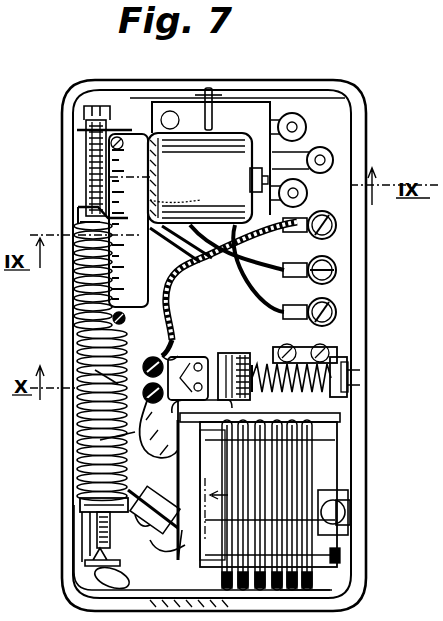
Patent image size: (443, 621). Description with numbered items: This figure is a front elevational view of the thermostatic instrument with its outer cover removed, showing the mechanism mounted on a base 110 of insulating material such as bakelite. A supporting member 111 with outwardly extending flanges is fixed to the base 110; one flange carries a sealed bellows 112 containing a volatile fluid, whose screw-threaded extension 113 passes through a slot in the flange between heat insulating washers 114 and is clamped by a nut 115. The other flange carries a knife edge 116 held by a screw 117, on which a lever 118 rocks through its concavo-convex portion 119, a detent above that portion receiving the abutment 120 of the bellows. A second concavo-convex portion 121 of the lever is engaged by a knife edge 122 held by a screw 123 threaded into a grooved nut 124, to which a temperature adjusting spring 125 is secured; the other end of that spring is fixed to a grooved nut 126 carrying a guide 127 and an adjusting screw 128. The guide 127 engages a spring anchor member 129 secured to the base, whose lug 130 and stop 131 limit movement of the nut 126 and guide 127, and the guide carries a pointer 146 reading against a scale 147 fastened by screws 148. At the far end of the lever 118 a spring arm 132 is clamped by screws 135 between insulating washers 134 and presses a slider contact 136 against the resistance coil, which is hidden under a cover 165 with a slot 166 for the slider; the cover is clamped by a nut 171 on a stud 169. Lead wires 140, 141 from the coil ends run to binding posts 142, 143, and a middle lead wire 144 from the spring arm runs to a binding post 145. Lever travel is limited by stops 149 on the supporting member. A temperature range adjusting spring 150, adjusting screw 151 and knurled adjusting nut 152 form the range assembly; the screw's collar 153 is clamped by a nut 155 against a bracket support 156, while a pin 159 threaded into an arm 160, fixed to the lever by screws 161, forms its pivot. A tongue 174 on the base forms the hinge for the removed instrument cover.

The base 110 is at (368, 465).
The supporting member 111 is at (343, 558).
The sealed bellows 112 is at (293, 590).
The screw-threaded extension 113 is at (345, 498).
The heat insulating washers 114 is at (343, 530).
The nut 115 is at (346, 512).
The knife edge 116 is at (165, 528).
The screw 117 is at (135, 520).
The lever 118 is at (170, 440).
The concavo-convex portion 119 is at (168, 550).
The abutment 120 is at (185, 545).
The concavo-convex portion 121 is at (86, 550).
The knife edge 122 is at (88, 563).
The screw 123 is at (97, 530).
The grooved nut 124 is at (80, 504).
The temperature adjusting spring 125 is at (135, 432).
The grooved nut 126 is at (80, 224).
The guide 127 is at (80, 214).
The adjusting screw 128 is at (88, 146).
The spring anchor member 129 is at (138, 130).
The lug 130 is at (72, 122).
The stop 131 is at (80, 304).
The spring arm 132 is at (160, 318).
The insulating washers 134 is at (168, 352).
The screws 135 is at (142, 426).
The slider contact 136 is at (160, 232).
The lead wire 140 is at (250, 268).
The lead wire 141 is at (276, 295).
The binding post 142 is at (336, 312).
The binding post 143 is at (338, 278).
The middle lead wire 144 is at (250, 230).
The binding post 145 is at (336, 229).
The pointer 146 is at (135, 222).
The scale 147 is at (150, 166).
The screws 148 is at (120, 316).
The stops 149 is at (195, 400).
The temperature range adjusting spring 150 is at (262, 366).
The adjusting screw 151 is at (300, 398).
The knurled adjusting nut 152 is at (232, 356).
The collar 153 is at (332, 395).
The nut 155 is at (348, 378).
The bracket support 156 is at (362, 348).
The pin 159 is at (118, 380).
The arm 160 is at (105, 362).
The screws 161 is at (195, 362).
The cover 165 is at (222, 140).
The slot 166 is at (208, 215).
The stud 169 is at (311, 150).
The nut 171 is at (280, 126).
The tongue 174 is at (212, 95).